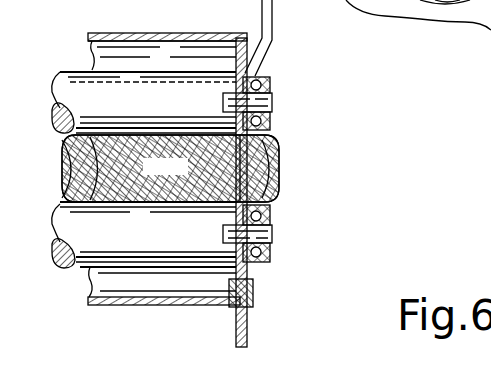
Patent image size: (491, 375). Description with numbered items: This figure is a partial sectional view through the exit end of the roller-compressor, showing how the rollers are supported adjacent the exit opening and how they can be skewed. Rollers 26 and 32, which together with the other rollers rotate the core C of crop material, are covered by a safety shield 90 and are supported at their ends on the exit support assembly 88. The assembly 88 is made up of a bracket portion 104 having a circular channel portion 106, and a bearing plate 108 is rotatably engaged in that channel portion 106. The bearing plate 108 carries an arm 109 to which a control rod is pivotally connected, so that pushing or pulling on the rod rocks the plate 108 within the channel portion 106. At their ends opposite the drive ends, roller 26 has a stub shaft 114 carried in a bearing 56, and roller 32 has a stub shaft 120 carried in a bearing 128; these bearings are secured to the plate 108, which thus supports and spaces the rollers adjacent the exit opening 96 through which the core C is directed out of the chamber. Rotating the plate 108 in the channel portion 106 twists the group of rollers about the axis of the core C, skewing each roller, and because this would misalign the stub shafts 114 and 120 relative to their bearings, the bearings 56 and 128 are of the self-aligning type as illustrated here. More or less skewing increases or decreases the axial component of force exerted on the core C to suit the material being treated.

The safety shield 90 is at (188, 32).
The arm 109 is at (271, 39).
The bearing 128 is at (272, 78).
The stub shaft 120 is at (272, 98).
The exit support assembly 88 is at (282, 121).
The roller 32 is at (144, 87).
The core C is at (170, 168).
The opening 96 is at (240, 178).
The roller 26 is at (144, 249).
The bearing 56 is at (271, 217).
The stub shaft 114 is at (273, 234).
The bearing plate 108 is at (265, 271).
The circular channel portion 106 is at (254, 292).
The bracket portion 104 is at (236, 336).